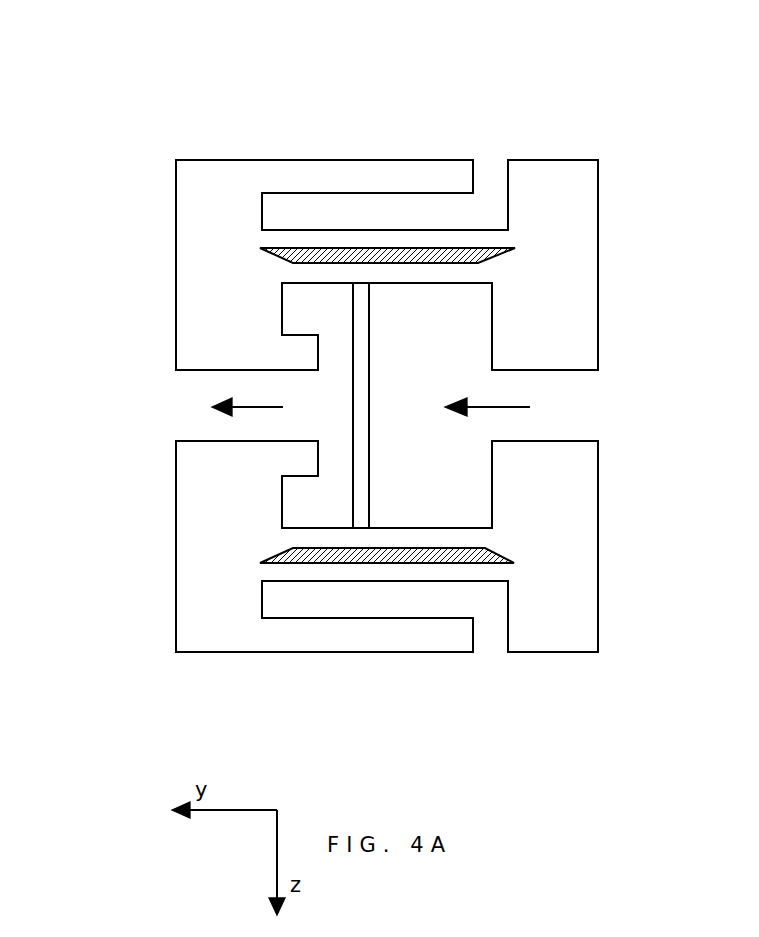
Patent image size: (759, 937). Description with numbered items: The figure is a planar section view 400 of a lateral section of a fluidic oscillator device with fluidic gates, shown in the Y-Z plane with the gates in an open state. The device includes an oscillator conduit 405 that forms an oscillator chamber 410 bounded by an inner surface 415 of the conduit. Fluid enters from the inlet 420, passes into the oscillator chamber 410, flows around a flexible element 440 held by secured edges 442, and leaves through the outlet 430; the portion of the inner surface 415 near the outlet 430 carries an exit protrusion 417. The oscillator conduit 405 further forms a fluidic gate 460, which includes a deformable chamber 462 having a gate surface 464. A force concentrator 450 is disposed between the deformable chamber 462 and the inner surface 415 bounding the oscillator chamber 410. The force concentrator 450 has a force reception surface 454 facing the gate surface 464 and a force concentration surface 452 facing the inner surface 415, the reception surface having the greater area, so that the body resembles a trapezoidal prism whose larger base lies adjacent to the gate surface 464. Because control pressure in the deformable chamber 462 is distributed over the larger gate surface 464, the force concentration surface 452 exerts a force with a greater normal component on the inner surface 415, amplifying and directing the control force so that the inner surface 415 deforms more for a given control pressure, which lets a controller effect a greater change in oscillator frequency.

The planar section view 400 is at (137, 47).
The oscillator conduit 405 is at (583, 216).
The oscillator chamber 410 is at (480, 323).
The inner surface 415 is at (478, 282).
The exit protrusion 417 is at (318, 458).
The inlet 420 is at (573, 390).
The outlet 430 is at (177, 410).
The flexible element 440 is at (369, 440).
The secured edges 442 is at (355, 527).
The force concentrator 450 is at (285, 252).
The force concentration surface 452 is at (447, 549).
The force reception surface 454 is at (298, 250).
The fluidic gate 460 is at (487, 180).
The deformable chamber 462 is at (392, 213).
The gate surface 464 is at (332, 233).